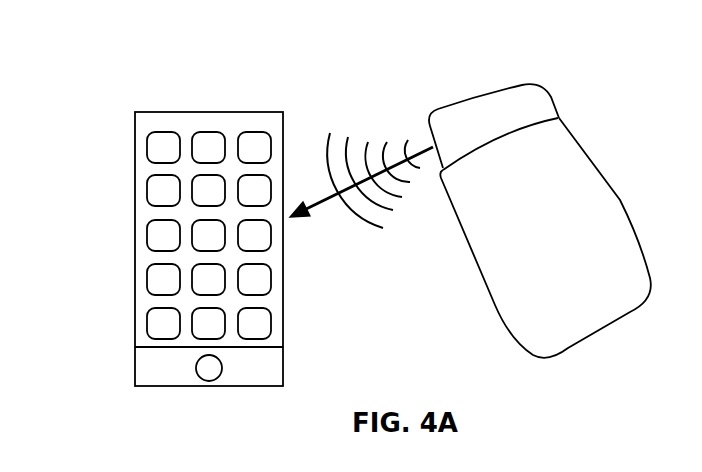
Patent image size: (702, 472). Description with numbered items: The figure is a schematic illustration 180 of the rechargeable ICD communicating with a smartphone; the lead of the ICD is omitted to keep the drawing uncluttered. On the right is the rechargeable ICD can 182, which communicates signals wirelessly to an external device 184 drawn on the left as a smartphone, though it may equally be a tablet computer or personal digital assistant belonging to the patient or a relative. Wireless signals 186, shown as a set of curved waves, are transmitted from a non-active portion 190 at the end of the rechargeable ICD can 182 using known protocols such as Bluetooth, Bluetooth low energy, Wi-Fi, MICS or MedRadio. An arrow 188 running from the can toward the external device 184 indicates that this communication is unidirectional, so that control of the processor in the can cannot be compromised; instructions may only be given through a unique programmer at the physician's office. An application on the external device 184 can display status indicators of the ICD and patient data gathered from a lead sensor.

The schematic illustration of rechargeable ICD communicating with smartphone 180 is at (183, 218).
The rechargeable ICD can 182 is at (534, 199).
The external device 184 is at (134, 203).
The wireless signals 186 is at (405, 207).
The arrow 188 is at (326, 196).
The non-active portion 190 is at (462, 120).